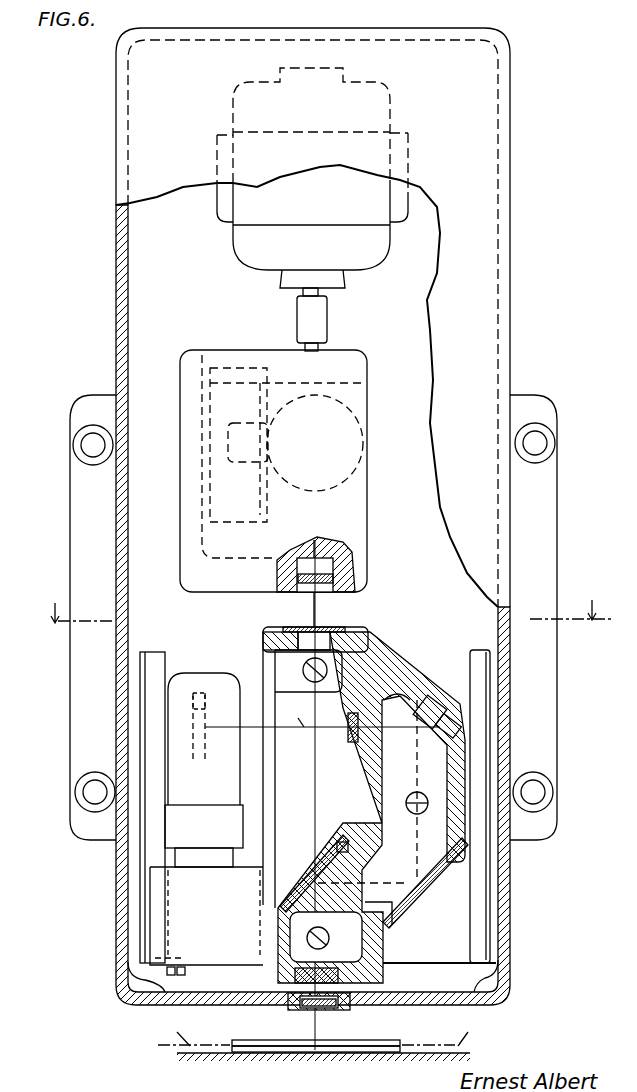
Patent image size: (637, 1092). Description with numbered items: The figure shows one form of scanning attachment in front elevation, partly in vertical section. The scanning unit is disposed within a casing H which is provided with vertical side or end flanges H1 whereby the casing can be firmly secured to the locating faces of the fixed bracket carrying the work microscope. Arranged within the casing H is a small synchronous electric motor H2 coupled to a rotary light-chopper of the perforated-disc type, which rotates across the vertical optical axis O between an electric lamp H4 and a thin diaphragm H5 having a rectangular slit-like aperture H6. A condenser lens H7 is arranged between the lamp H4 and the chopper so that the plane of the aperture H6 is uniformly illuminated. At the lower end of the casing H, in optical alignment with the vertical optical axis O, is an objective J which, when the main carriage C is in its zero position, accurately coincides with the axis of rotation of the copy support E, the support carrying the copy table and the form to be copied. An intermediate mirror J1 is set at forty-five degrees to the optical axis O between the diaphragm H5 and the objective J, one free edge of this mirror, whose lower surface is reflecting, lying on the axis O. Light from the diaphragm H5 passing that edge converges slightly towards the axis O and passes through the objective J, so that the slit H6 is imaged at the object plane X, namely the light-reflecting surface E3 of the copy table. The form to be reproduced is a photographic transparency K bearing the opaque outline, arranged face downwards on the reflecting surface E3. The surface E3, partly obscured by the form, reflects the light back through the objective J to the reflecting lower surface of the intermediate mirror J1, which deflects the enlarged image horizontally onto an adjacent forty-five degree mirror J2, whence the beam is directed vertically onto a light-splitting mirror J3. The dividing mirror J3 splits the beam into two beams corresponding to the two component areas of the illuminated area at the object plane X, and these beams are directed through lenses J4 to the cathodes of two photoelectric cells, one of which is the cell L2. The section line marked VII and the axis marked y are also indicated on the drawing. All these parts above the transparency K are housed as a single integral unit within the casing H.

The casing H is at (480, 185).
The side or end flanges H1 is at (88, 735).
The synchronous electric motor H2 is at (358, 256).
The electric lamp H4 is at (337, 440).
The diaphragm H5 is at (342, 627).
The slit-like aperture H6 is at (308, 627).
The condenser lens H7 is at (340, 562).
The photoelectric cell L2 is at (228, 685).
The objective J is at (330, 968).
The intermediate mirror J1 is at (308, 882).
The 45° mirror J2 is at (417, 893).
The light-splitting mirror J3 is at (422, 685).
The lenses J4 is at (365, 715).
The vertical optical axis O is at (315, 605).
The axis y is at (296, 713).
The copy support E is at (315, 1026).
The reflecting surface E3 is at (402, 1043).
The photographic transparency K is at (362, 1040).
The main carriage C is at (455, 1052).
The object plane X is at (316, 1031).
The section line VII is at (66, 600).